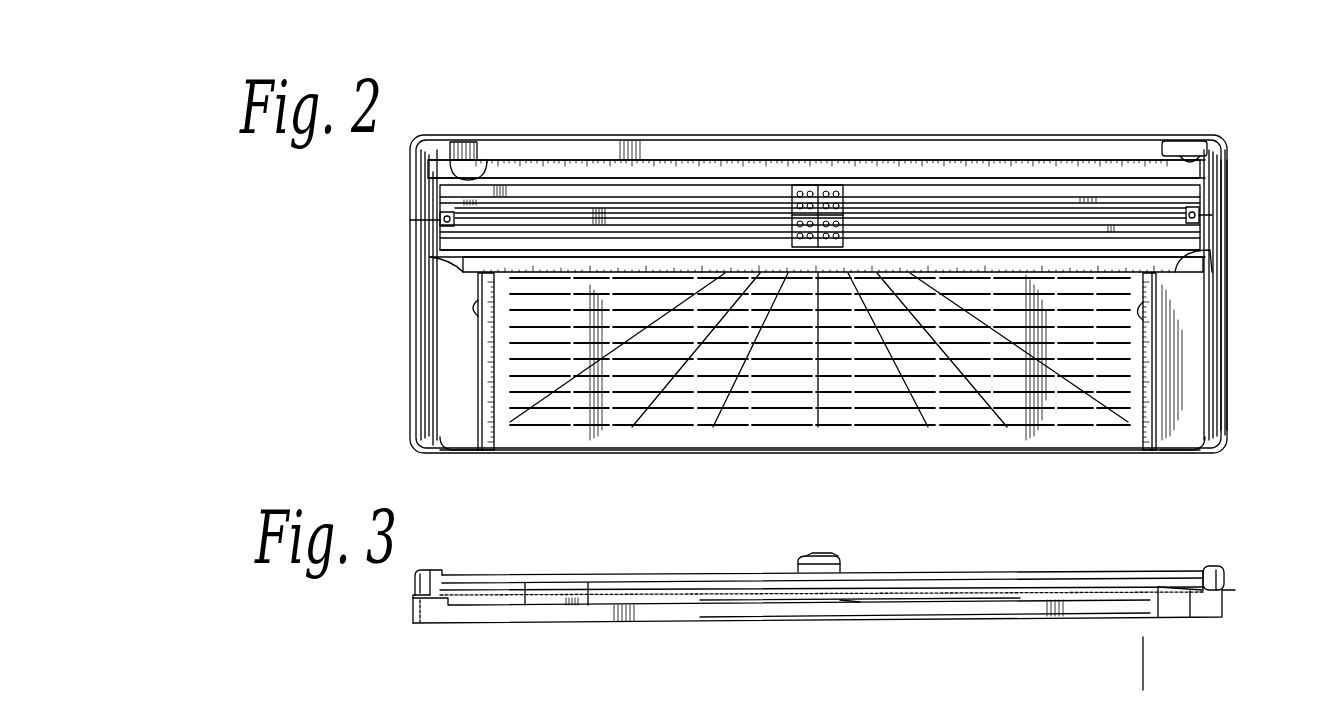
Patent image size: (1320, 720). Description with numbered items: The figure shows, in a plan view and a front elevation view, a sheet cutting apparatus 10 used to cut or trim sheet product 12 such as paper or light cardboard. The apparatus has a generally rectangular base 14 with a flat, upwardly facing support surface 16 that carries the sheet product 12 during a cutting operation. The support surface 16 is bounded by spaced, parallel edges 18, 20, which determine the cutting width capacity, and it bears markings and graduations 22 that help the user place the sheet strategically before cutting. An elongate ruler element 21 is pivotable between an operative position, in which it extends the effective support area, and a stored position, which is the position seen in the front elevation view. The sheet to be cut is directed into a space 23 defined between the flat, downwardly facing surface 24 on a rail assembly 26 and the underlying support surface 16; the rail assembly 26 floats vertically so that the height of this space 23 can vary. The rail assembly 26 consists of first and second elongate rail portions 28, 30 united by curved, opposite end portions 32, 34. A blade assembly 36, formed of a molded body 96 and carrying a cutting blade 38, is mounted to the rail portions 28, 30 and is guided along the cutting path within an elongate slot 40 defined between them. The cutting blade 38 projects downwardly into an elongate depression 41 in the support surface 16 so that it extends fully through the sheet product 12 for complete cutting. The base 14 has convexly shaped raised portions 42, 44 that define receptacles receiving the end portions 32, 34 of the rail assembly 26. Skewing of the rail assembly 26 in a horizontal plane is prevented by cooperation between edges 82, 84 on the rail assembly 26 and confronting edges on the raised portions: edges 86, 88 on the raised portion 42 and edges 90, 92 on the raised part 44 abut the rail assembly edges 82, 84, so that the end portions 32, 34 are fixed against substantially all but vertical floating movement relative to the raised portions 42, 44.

In FIG. 2, the sheet cutting apparatus 10 is at (943, 116).
In FIG. 3, the sheet product 12 is at (1143, 635).
In FIG. 2, the base 14 is at (1195, 390).
In FIG. 3, the base 14 is at (1213, 618).
In FIG. 2, the support surface 16 is at (570, 245).
In FIG. 3, the support surface 16 is at (493, 597).
In FIG. 2, the edge 18 is at (476, 297).
In FIG. 3, the edge 18 is at (455, 578).
In FIG. 2, the edge 20 is at (1140, 310).
In FIG. 3, the edge 20 is at (1187, 568).
In FIG. 3, the ruler element 21 is at (920, 620).
In FIG. 2, the markings and graduations 22 is at (888, 366).
In FIG. 3, the space 23 is at (588, 603).
In FIG. 3, the downwardly facing surface 24 is at (525, 603).
In FIG. 2, the rail assembly 26 is at (557, 185).
In FIG. 3, the rail assembly 26 is at (963, 571).
In FIG. 2, the first rail portion 28 is at (522, 252).
In FIG. 3, the first rail portion 28 is at (917, 575).
In FIG. 2, the second rail portion 30 is at (1013, 195).
In FIG. 2, the end portion 32 is at (436, 207).
In FIG. 3, the end portion 32 is at (432, 572).
In FIG. 2, the end portion 34 is at (1228, 158).
In FIG. 3, the end portion 34 is at (1205, 570).
In FIG. 2, the blade assembly 36 is at (828, 186).
In FIG. 3, the blade assembly 36 is at (832, 558).
In FIG. 3, the cutting blade 38 is at (820, 600).
In FIG. 2, the elongate slot 40 is at (1113, 215).
In FIG. 3, the elongate depression 41 is at (848, 603).
In FIG. 2, the raised portion 42 is at (412, 214).
In FIG. 3, the raised portion 42 is at (414, 582).
In FIG. 2, the raised portion 44 is at (1229, 198).
In FIG. 3, the raised portion 44 is at (1226, 590).
In FIG. 2, the edge 82 is at (647, 160).
In FIG. 2, the edge 84 is at (558, 250).
In FIG. 2, the edge 86 is at (477, 167).
In FIG. 2, the edge 88 is at (463, 272).
In FIG. 2, the edge 90 is at (1195, 205).
In FIG. 2, the edge 92 is at (1220, 250).
In FIG. 2, the molded body 96 is at (797, 186).
In FIG. 3, the molded body 96 is at (803, 558).